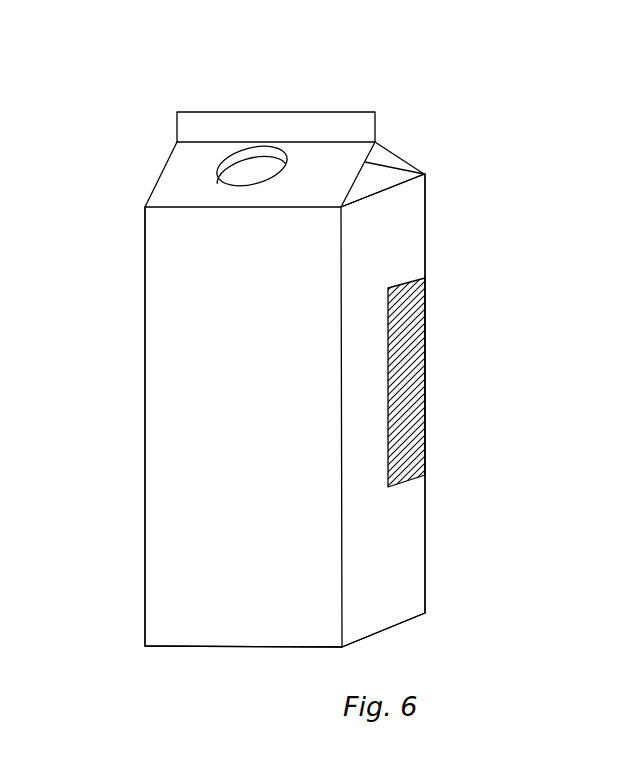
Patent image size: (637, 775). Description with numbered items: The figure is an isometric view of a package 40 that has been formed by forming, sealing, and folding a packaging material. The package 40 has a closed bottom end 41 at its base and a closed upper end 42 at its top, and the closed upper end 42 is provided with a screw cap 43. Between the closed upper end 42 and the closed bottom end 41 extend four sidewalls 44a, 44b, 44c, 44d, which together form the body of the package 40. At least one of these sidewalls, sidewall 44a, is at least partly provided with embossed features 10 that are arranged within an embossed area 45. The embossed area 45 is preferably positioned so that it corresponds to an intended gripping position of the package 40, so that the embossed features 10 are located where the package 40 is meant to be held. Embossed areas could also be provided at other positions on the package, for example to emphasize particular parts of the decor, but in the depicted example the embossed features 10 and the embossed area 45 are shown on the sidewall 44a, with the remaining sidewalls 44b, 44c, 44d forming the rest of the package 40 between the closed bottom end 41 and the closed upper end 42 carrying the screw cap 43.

The package 40 is at (400, 113).
The closed bottom end 41 is at (403, 622).
The closed upper end 42 is at (157, 178).
The screw cap 43 is at (245, 148).
The sidewall 44a is at (405, 562).
The sidewall 44b is at (167, 507).
The sidewall 44c is at (145, 433).
The sidewall 44d is at (438, 242).
The embossed features 10 is at (461, 387).
The embossed area 45 is at (423, 367).